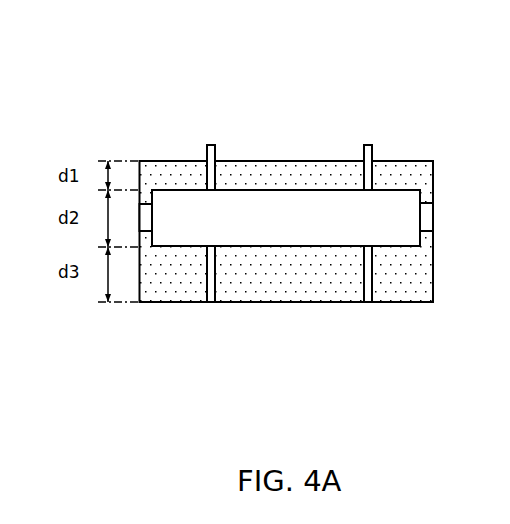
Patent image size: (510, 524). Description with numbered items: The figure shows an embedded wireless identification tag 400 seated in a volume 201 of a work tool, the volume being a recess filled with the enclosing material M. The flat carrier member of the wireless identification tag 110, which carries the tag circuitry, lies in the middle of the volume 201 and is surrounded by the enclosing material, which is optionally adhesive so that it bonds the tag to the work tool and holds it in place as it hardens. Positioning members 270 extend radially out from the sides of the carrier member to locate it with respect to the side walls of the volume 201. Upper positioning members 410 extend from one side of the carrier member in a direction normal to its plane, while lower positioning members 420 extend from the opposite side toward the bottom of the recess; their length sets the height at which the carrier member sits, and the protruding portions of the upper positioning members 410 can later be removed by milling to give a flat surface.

The wireless identification tag 400 is at (99, 67).
The volume 201 is at (186, 176).
The wireless identification tag 110 is at (282, 198).
The positioning members 270 is at (154, 214).
The upper positioning members 410 is at (217, 148).
The lower positioning members 420 is at (215, 280).